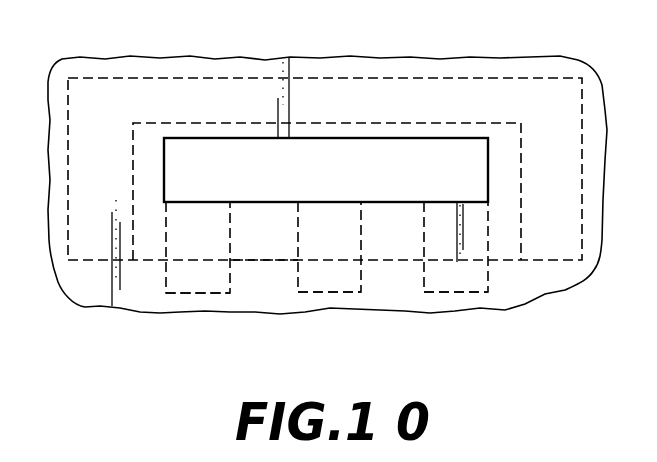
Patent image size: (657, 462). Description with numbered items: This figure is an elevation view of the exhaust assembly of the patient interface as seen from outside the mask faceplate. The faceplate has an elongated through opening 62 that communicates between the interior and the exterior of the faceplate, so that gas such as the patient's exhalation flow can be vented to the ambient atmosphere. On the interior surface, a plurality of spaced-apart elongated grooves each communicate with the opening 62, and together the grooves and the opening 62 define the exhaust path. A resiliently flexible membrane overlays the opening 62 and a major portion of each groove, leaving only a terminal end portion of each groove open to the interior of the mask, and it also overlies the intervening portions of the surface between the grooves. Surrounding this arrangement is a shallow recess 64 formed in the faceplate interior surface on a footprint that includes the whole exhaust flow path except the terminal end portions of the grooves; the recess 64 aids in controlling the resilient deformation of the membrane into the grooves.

The shallow recess 64 is at (530, 128).
The elongated through opening 62 is at (437, 153).